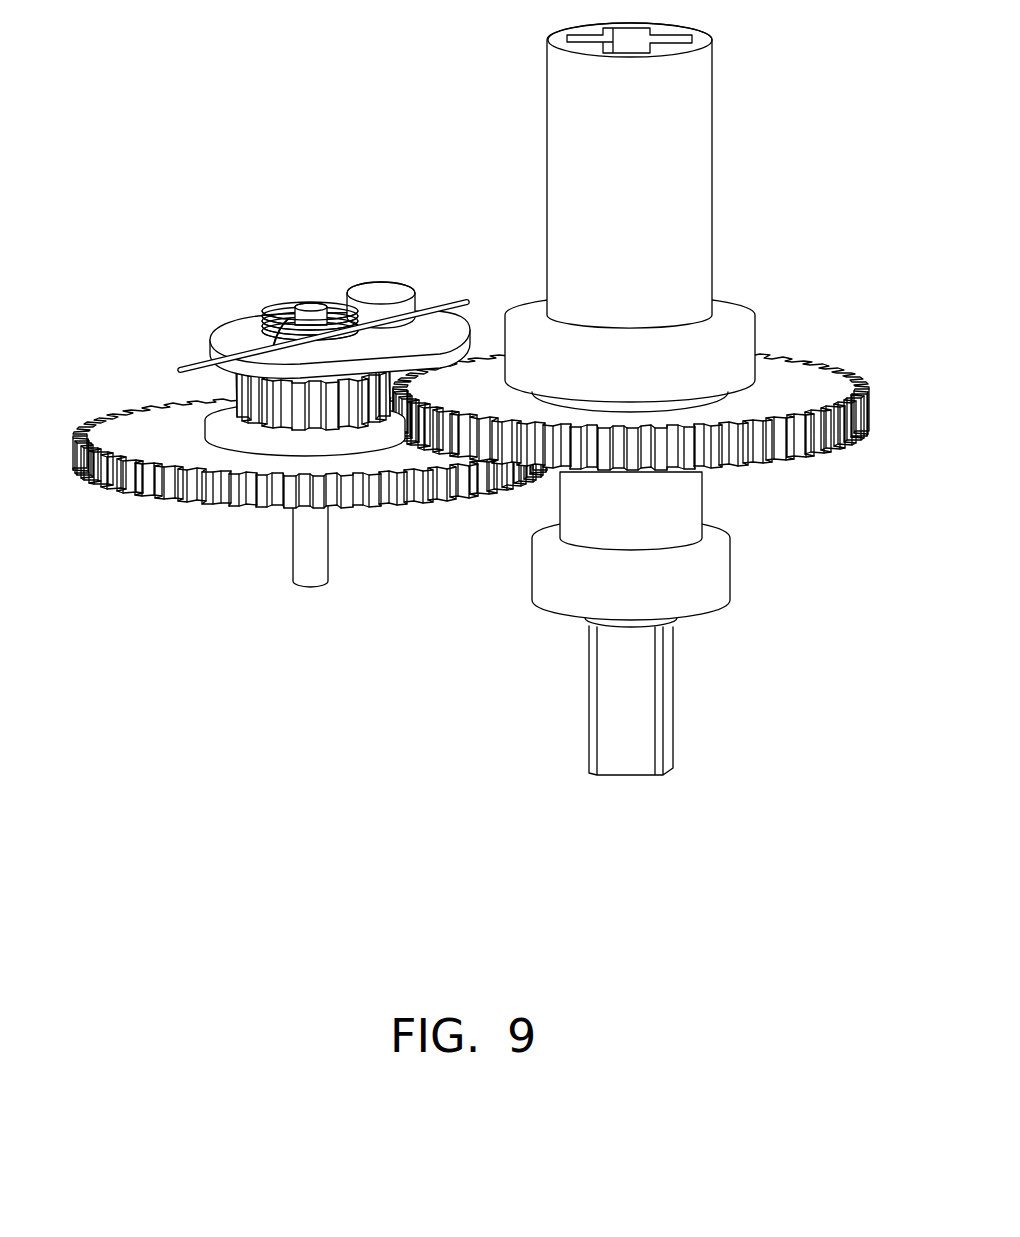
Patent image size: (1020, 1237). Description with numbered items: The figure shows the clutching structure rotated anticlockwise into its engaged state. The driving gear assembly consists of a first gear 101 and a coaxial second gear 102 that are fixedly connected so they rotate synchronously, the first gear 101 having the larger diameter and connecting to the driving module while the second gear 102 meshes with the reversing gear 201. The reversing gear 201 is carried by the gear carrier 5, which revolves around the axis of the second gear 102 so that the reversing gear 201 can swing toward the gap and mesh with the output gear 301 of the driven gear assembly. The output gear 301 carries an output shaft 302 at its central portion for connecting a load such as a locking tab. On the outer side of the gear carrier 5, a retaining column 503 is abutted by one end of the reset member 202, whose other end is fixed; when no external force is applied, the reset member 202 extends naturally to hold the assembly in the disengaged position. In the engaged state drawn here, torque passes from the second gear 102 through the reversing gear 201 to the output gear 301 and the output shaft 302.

The gear carrier 5 is at (266, 391).
The first gear 101 is at (155, 450).
The second gear 102 is at (262, 416).
The reversing gear 201 is at (390, 363).
The reset member 202 is at (282, 302).
The output gear 301 is at (777, 385).
The output shaft 302 is at (675, 220).
The retaining column 503 is at (371, 293).